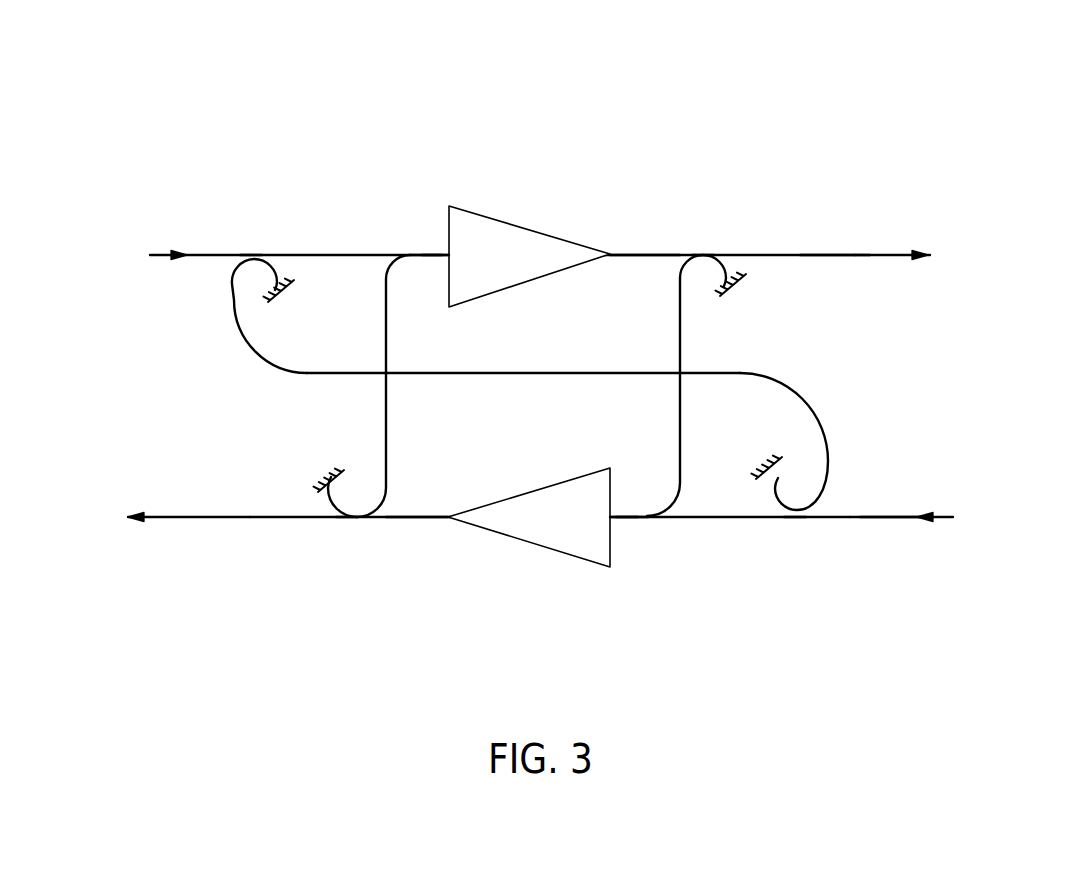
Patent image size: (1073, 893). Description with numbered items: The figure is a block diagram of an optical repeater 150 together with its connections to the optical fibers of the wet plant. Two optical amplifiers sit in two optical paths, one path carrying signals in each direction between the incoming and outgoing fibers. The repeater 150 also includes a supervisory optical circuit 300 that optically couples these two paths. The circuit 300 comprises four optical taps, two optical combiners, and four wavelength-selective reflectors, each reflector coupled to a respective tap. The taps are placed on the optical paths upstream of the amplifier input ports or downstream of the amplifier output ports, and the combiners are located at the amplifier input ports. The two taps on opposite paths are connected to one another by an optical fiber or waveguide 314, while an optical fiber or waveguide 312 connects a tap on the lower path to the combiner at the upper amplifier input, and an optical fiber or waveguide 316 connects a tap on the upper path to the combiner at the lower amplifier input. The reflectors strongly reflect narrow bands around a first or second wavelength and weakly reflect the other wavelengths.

The optical repeater 150 is at (107, 83).
The supervisory optical circuit 300 is at (205, 384).
The optical fiber or waveguide 312 is at (388, 428).
The optical fiber or waveguide 314 is at (575, 372).
The optical fiber or waveguide 316 is at (678, 383).